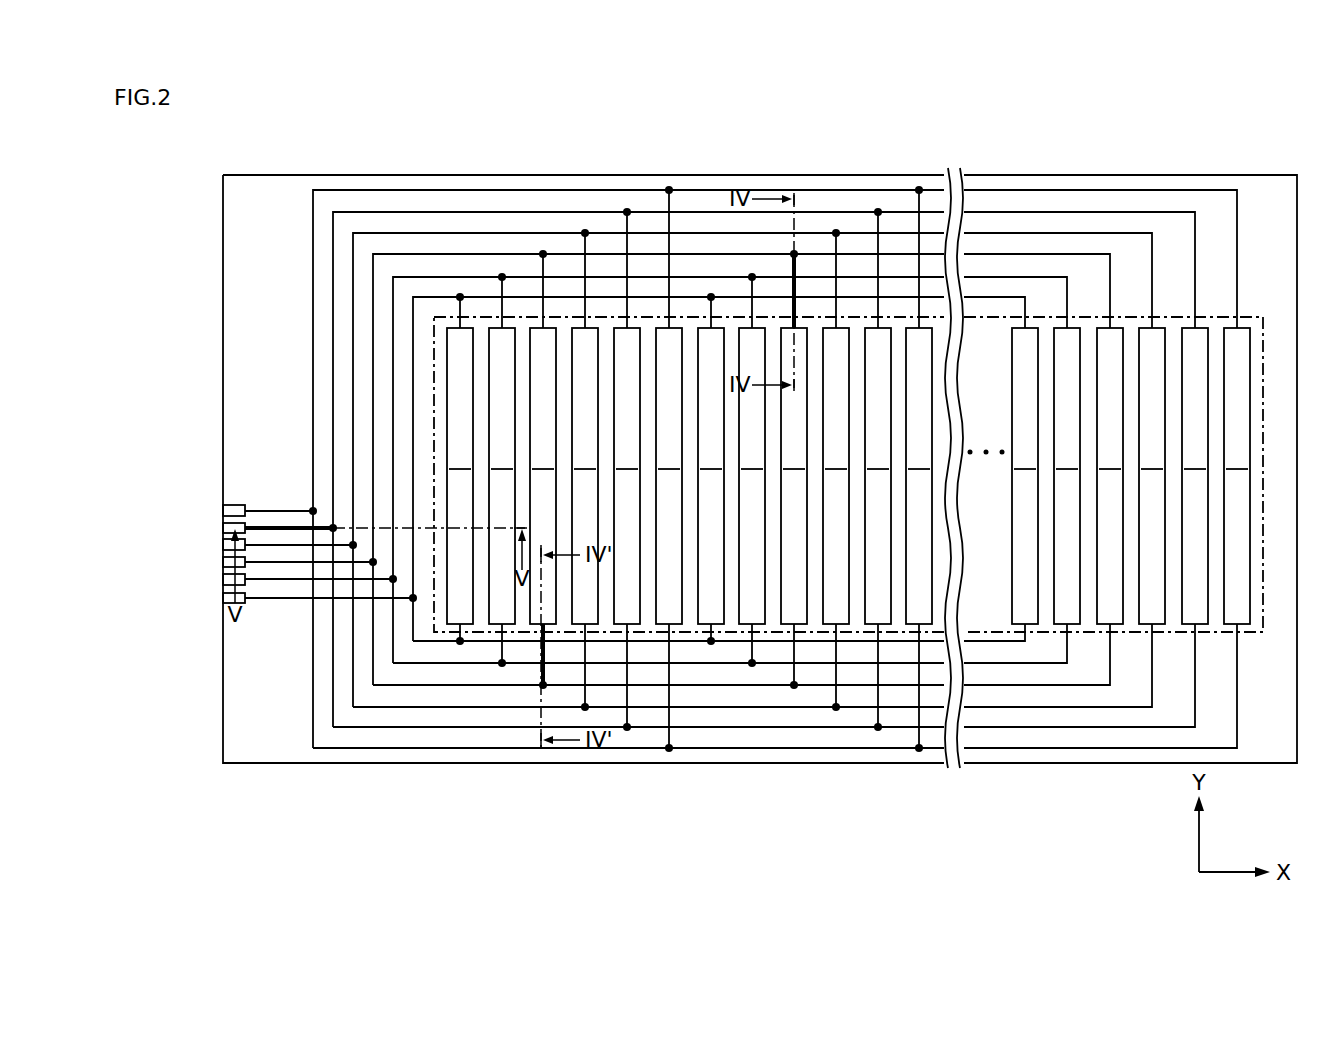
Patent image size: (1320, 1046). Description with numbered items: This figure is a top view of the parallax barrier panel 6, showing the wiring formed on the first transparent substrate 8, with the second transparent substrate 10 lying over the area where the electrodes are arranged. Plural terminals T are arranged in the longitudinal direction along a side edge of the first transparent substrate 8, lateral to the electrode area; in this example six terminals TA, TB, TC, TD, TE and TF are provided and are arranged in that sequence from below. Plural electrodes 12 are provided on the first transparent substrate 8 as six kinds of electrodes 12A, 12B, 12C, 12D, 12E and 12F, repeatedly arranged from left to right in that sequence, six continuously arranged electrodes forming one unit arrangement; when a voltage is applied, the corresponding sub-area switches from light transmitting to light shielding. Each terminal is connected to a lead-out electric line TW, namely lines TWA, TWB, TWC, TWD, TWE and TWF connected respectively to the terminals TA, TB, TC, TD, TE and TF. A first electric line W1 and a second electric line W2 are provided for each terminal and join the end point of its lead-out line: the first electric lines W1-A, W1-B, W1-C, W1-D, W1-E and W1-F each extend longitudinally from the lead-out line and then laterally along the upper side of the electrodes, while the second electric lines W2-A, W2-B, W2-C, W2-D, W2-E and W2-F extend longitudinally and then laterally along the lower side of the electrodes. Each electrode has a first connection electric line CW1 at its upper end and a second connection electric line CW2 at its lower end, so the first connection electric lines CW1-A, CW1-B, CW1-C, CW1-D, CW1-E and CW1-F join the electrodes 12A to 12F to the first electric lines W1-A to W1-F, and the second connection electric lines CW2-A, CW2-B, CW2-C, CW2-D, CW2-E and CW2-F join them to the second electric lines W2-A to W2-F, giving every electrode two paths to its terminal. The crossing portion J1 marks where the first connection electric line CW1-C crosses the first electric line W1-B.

The parallax barrier panel 6 is at (1020, 143).
The first transparent substrate 8 is at (1270, 175).
The second transparent substrate 10 is at (1250, 317).
The electrodes 12 is at (872, 485).
The electrode 12A is at (742, 476).
The electrode 12B is at (784, 476).
The electrode 12C is at (826, 476).
The electrode 12D is at (868, 476).
The electrode 12E is at (911, 476).
The electrode 12F is at (1250, 620).
The first electric line W1 is at (705, 469).
The first electric line W1-A is at (413, 312).
The first electric line W1-B is at (393, 307).
The first electric line W1-C is at (373, 285).
The first electric line W1-D is at (353, 272).
The first electric line W1-E is at (333, 247).
The first electric line W1-F is at (218, 342).
The second electric line W2 is at (771, 764).
The second electric line W2-A is at (432, 641).
The second electric line W2-B is at (444, 663).
The second electric line W2-C is at (459, 685).
The second electric line W2-D is at (479, 707).
The second electric line W2-E is at (495, 727).
The second electric line W2-F is at (510, 748).
The first connection electric line CW1 is at (664, 199).
The first connection electric line CW1-A is at (460, 297).
The first connection electric line CW1-B is at (502, 277).
The first connection electric line CW1-C is at (543, 254).
The first connection electric line CW1-D is at (585, 233).
The first connection electric line CW1-E is at (627, 212).
The first connection electric line CW1-F is at (775, 235).
The second connection electric line CW2 is at (701, 751).
The second connection electric line CW2-A is at (711, 641).
The second connection electric line CW2-B is at (753, 663).
The second connection electric line CW2-C is at (793, 685).
The second connection electric line CW2-D is at (837, 707).
The second connection electric line CW2-E is at (878, 727).
The second connection electric line CW2-F is at (806, 713).
The terminals T is at (190, 551).
The terminal TA is at (209, 609).
The terminal TB is at (224, 580).
The terminal TC is at (224, 562).
The terminal TD is at (224, 545).
The terminal TE is at (224, 525).
The terminal TF is at (224, 507).
The lead-out electric line TW is at (258, 641).
The lead-out electric line TWA is at (302, 598).
The lead-out electric line TWB is at (294, 579).
The lead-out electric line TWC is at (288, 562).
The lead-out electric line TWD is at (282, 545).
The lead-out electric line TWE is at (276, 528).
The lead-out electric line TWF is at (268, 511).
The crossing portion J1 is at (786, 264).